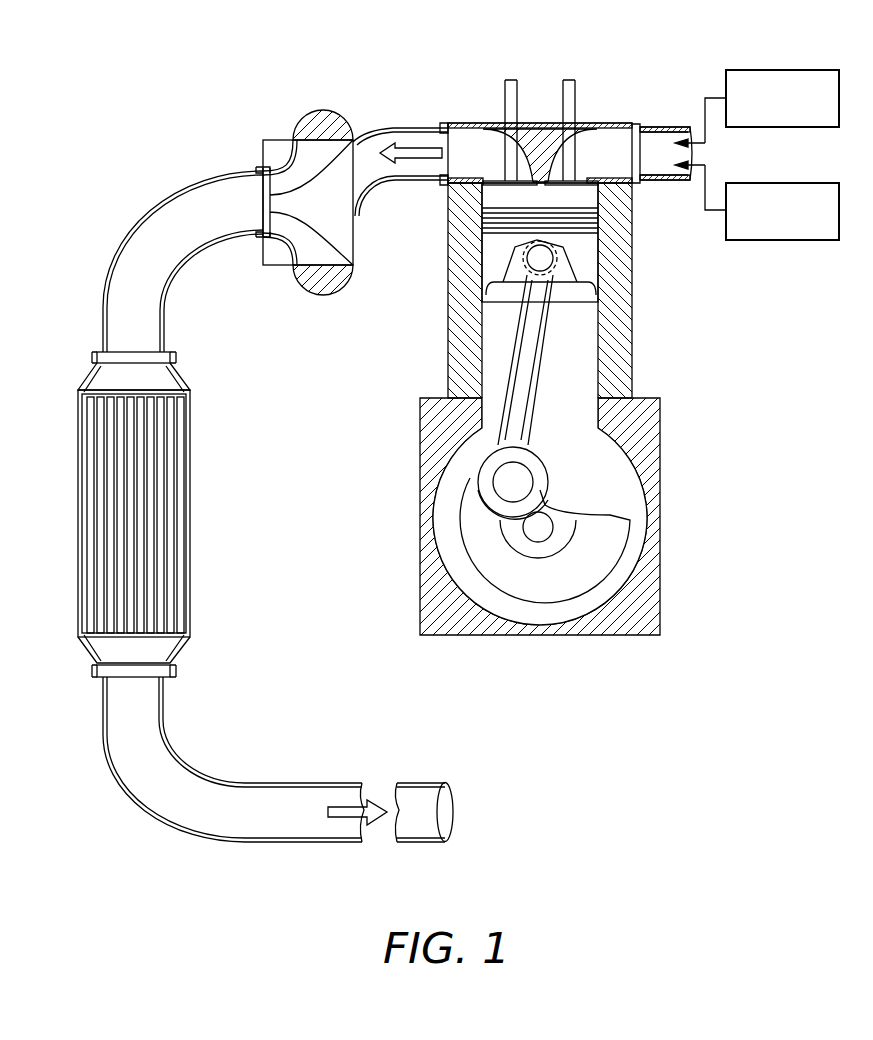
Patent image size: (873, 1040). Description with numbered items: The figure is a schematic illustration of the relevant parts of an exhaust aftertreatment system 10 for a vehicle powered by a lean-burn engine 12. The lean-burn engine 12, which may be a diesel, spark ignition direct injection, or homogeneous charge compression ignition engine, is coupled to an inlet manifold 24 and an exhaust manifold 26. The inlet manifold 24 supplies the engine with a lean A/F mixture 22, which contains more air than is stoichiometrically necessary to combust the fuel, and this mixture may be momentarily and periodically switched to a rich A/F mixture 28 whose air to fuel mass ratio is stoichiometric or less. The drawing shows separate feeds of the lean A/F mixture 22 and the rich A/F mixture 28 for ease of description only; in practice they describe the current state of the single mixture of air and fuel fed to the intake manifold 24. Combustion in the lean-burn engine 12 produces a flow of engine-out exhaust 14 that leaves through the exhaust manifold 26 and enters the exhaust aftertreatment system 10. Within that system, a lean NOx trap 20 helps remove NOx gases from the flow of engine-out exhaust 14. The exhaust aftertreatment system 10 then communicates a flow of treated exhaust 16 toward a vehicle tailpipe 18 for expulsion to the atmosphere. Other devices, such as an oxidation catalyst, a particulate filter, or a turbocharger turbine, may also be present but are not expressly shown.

The exhaust aftertreatment system 10 is at (135, 174).
The lean-burn engine 12 is at (633, 267).
The flow of engine-out exhaust 14 is at (420, 148).
The flow of treated exhaust 16 is at (338, 820).
The vehicle tailpipe 18 is at (407, 785).
The lean NOx trap 20 is at (76, 455).
The lean A/F mixture 22 is at (767, 70).
The inlet manifold 24 is at (663, 128).
The exhaust manifold 26 is at (432, 127).
The rich A/F mixture 28 is at (763, 240).